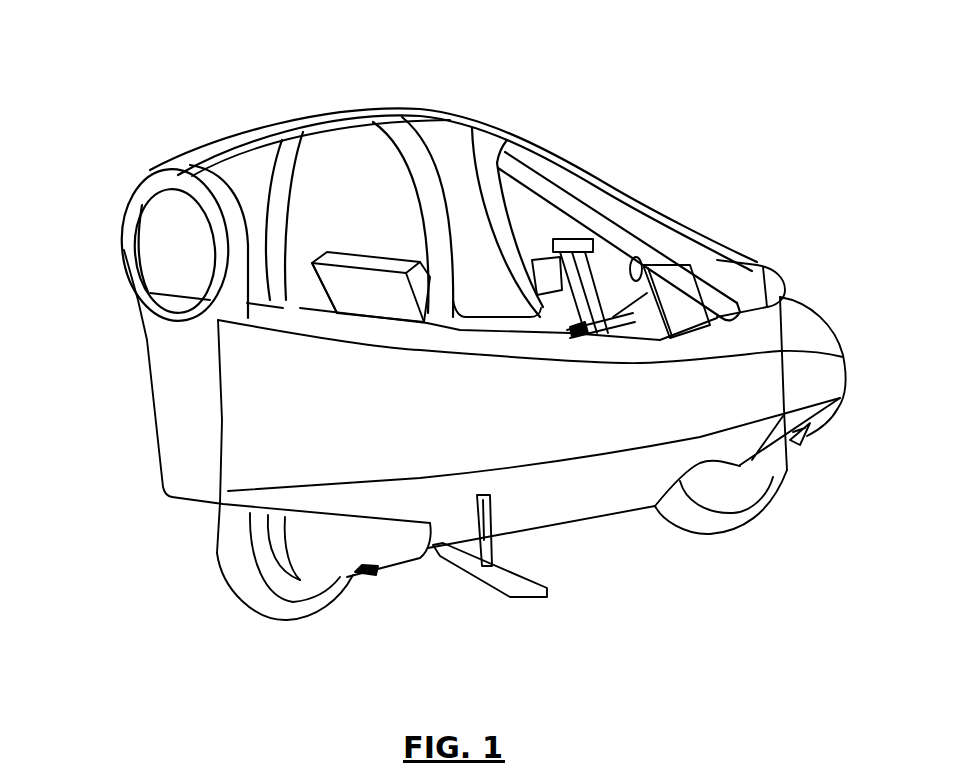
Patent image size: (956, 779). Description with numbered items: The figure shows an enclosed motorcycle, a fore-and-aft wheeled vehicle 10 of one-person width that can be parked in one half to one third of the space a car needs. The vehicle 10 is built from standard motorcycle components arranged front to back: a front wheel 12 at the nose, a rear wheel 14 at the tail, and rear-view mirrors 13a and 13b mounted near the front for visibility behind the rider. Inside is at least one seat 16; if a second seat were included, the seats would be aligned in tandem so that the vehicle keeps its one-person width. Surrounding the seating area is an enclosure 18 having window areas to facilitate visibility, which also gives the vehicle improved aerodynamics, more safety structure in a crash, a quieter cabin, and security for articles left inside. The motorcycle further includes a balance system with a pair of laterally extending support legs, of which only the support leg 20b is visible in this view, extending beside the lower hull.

The vehicle 10 is at (598, 571).
The front wheel 12 is at (753, 497).
The rear-view mirror 13a is at (575, 240).
The rear-view mirror 13b is at (753, 278).
The rear wheel 14 is at (243, 557).
The seat 16 is at (407, 272).
The enclosure 18 is at (443, 143).
The support leg 20b is at (490, 590).